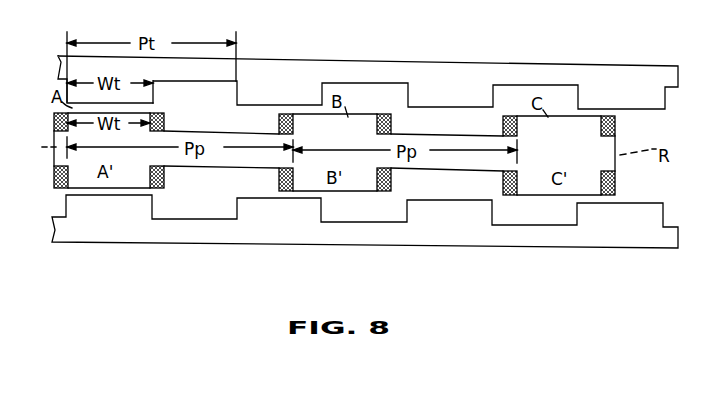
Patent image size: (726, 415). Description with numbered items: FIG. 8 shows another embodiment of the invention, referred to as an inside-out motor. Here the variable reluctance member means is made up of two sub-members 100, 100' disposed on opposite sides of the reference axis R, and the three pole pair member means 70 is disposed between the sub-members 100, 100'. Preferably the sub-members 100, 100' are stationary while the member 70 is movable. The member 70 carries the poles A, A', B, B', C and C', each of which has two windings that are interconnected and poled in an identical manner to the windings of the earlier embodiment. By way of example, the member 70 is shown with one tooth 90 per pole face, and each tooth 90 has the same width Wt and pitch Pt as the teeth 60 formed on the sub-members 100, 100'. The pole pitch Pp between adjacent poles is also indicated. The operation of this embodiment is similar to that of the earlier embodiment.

The sub-member 100 is at (368, 73).
The sub-member 100' is at (365, 235).
The teeth 60 is at (153, 105).
The tooth 90 is at (164, 118).
The three pole pair member means 70 is at (616, 142).